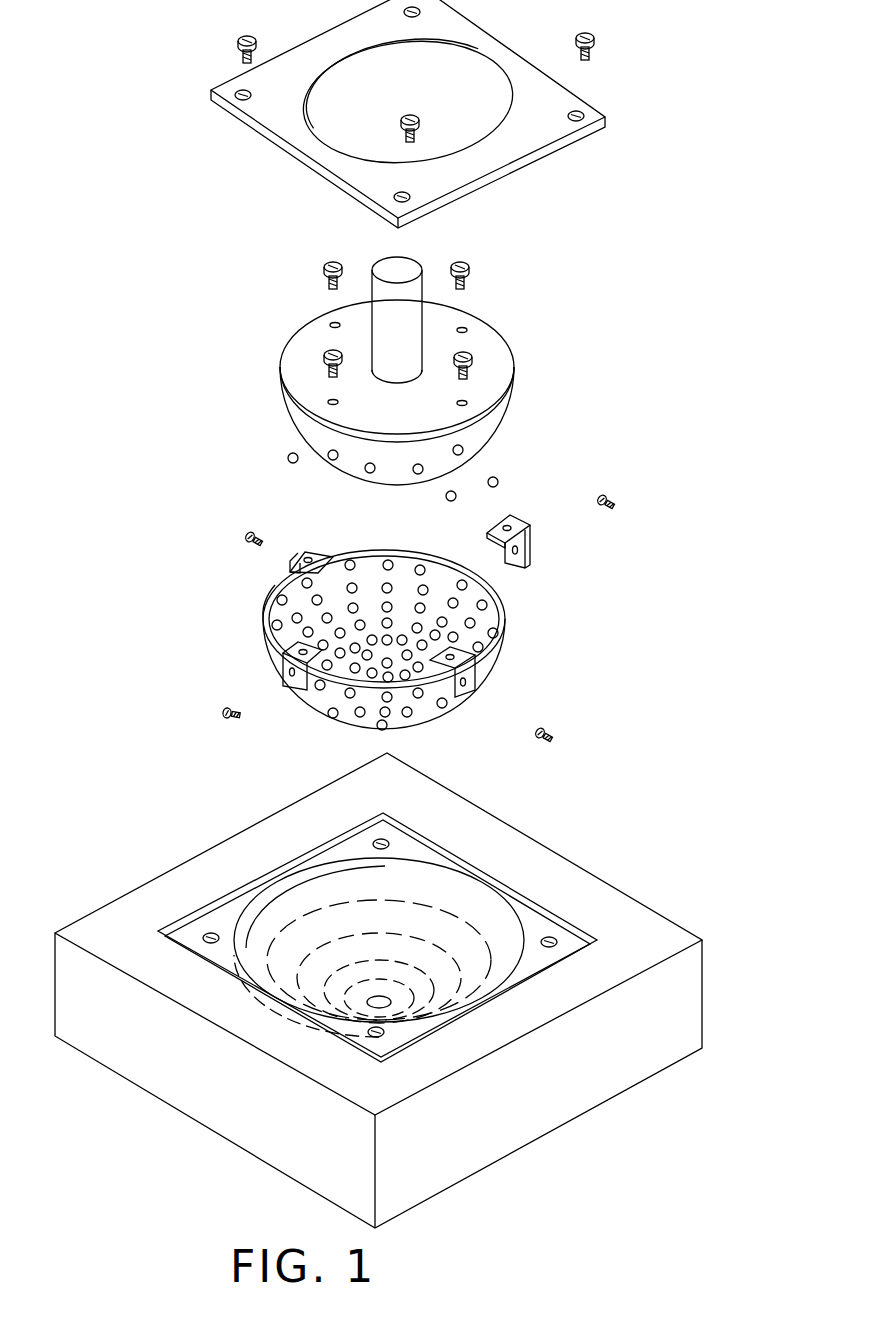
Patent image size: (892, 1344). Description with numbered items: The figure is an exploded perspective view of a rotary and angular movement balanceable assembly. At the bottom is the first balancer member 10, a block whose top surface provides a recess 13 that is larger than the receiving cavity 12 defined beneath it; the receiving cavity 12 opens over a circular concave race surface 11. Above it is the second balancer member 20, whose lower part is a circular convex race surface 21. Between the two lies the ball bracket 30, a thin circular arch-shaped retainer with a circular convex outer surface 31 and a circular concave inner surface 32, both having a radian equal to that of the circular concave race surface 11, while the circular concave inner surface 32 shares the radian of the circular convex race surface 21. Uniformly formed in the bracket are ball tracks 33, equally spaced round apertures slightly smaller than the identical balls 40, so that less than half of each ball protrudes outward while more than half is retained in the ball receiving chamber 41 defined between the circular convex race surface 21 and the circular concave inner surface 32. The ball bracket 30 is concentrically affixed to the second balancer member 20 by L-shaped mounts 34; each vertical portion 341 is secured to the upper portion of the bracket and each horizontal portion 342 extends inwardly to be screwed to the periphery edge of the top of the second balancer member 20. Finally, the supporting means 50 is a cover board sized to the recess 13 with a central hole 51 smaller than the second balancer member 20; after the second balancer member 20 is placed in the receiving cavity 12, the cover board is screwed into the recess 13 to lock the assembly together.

The first balancer member 10 is at (403, 990).
The circular concave race surface 11 is at (453, 926).
The receiving cavity 12 is at (308, 912).
The recess 13 is at (540, 931).
The second balancer member 20 is at (403, 371).
The circular convex race surface 21 is at (305, 428).
The ball bracket 30 is at (406, 631).
The circular convex outer surface 31 is at (440, 705).
The circular concave inner surface 32 is at (337, 583).
The ball tracks 33 is at (405, 712).
The L-shaped mount 34 is at (560, 536).
The vertical portion 341 is at (520, 565).
The horizontal portion 342 is at (507, 517).
The balls 40 is at (505, 478).
The ball receiving chamber 41 is at (290, 617).
The supporting means 50 is at (481, 114).
The central hole 51 is at (345, 110).